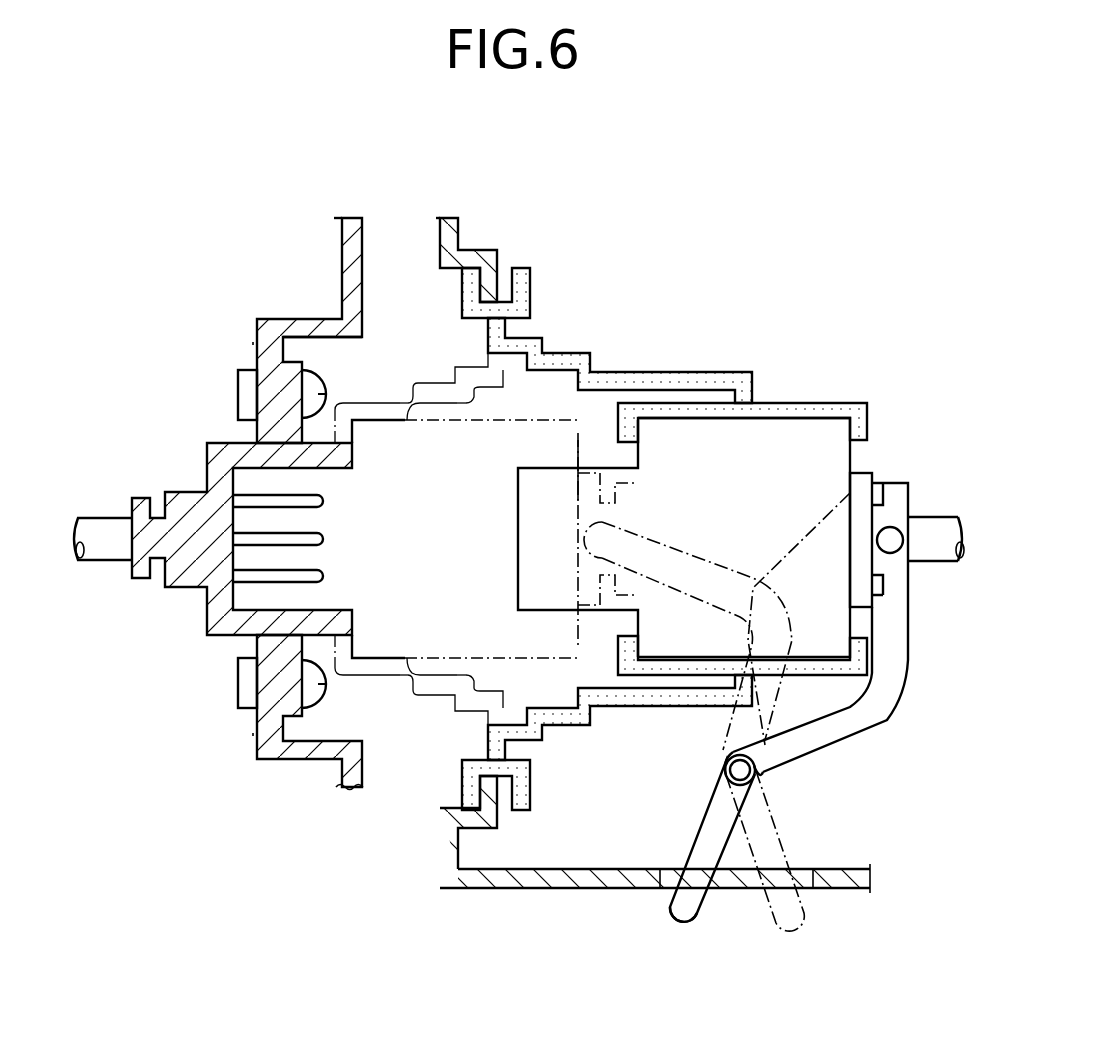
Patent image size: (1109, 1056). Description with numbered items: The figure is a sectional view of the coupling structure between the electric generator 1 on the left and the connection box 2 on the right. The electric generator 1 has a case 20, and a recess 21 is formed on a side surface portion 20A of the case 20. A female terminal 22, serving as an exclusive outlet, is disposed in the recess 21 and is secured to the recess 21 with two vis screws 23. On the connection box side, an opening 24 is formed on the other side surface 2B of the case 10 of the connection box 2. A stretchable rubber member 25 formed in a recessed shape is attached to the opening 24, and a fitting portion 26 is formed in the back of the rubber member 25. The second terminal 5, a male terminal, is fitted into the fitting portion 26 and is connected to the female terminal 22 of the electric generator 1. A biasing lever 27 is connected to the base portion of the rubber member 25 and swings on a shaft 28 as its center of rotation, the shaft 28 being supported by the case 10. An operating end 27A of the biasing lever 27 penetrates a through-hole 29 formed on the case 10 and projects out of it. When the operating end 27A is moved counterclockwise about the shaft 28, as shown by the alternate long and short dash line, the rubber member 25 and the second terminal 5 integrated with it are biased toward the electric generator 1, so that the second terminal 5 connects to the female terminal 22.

The electric generator 1 is at (243, 197).
The connection box 2 is at (705, 197).
The other side surface 2B is at (437, 222).
The second terminal 5 is at (253, 342).
The case 10 is at (537, 887).
The case 20 is at (317, 761).
The side surface portion 20A is at (362, 243).
The recess 21 is at (343, 348).
The female terminal 22 is at (215, 445).
The vis screws 23 is at (277, 483).
The opening 24 is at (488, 773).
The rubber member 25 is at (578, 353).
The fitting portion 26 is at (505, 448).
The biasing lever 27 is at (850, 495).
The operating end 27A is at (685, 913).
The shaft 28 is at (742, 769).
The through-hole 29 is at (668, 893).